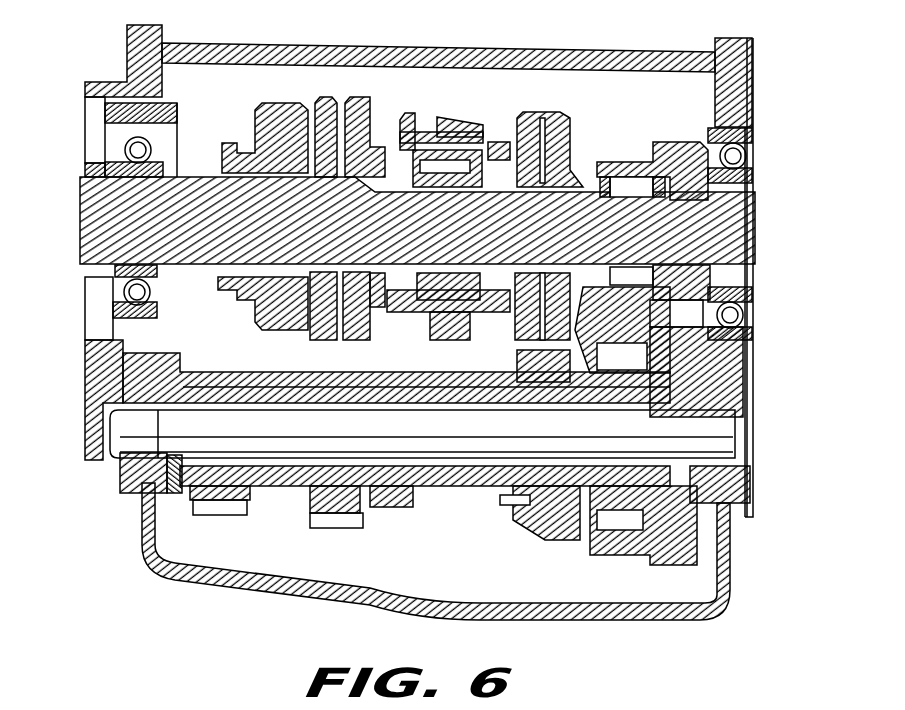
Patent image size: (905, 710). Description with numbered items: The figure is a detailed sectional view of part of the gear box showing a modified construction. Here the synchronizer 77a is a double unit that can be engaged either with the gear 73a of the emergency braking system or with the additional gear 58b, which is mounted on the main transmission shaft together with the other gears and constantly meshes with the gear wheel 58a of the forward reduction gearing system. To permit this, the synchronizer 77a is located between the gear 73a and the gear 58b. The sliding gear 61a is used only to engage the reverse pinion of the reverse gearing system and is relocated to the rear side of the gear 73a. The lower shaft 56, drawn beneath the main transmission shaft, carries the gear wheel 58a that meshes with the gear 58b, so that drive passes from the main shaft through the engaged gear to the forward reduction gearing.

The countershaft 56 is at (468, 437).
The gear wheel 58a is at (558, 508).
The gear 58b is at (553, 133).
The sliding gear 61a is at (274, 143).
The gear 73a is at (366, 124).
The synchronizer 77a is at (450, 135).